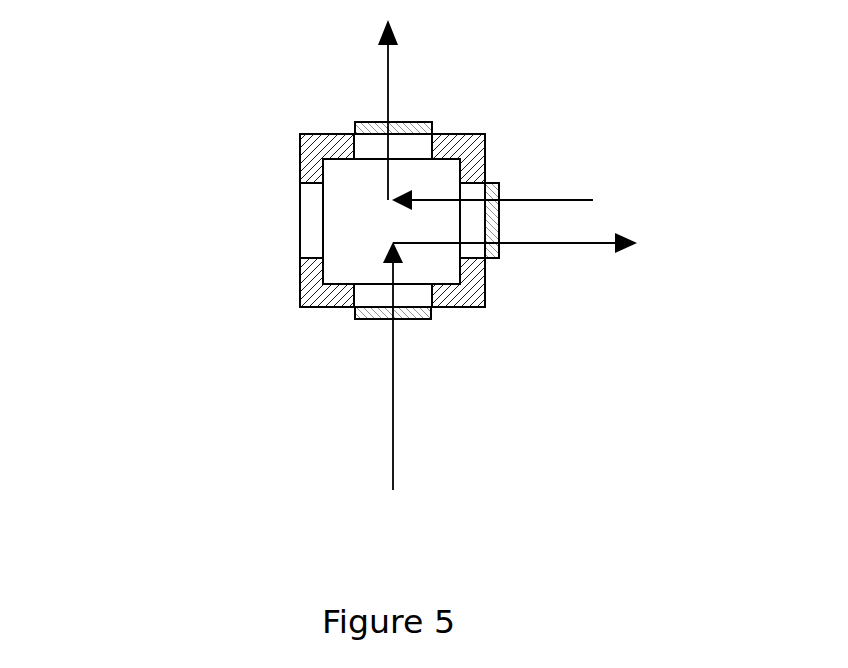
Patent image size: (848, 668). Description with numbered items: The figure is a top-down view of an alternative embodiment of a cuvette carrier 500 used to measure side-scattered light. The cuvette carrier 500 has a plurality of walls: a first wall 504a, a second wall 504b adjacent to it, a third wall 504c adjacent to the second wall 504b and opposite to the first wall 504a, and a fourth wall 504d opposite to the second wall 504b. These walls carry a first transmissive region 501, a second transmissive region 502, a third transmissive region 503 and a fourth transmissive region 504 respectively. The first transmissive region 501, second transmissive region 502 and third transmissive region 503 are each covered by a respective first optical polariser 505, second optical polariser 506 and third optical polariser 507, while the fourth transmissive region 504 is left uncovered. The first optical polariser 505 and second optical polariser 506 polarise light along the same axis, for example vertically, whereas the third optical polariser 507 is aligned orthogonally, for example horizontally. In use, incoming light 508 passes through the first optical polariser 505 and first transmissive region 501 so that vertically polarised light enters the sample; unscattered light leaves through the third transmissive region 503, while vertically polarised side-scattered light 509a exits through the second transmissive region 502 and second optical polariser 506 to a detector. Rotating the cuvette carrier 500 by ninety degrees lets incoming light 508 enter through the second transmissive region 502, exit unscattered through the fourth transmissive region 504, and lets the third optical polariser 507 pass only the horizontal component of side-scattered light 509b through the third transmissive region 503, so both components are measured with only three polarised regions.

The cuvette carrier 500 is at (134, 51).
The first transmissive region 501 is at (433, 300).
The second transmissive region 502 is at (473, 252).
The third transmissive region 503 is at (420, 146).
The fourth transmissive region 504 is at (311, 213).
The first wall 504a is at (326, 307).
The second wall 504b is at (486, 161).
The third wall 504c is at (322, 133).
The fourth wall 504d is at (300, 159).
The first optical polariser 505 is at (372, 318).
The second optical polariser 506 is at (500, 260).
The third optical polariser 507 is at (362, 127).
The incoming light 508 is at (393, 461).
The side-scattered light 509a is at (593, 243).
The side-scattered light 509b is at (388, 57).